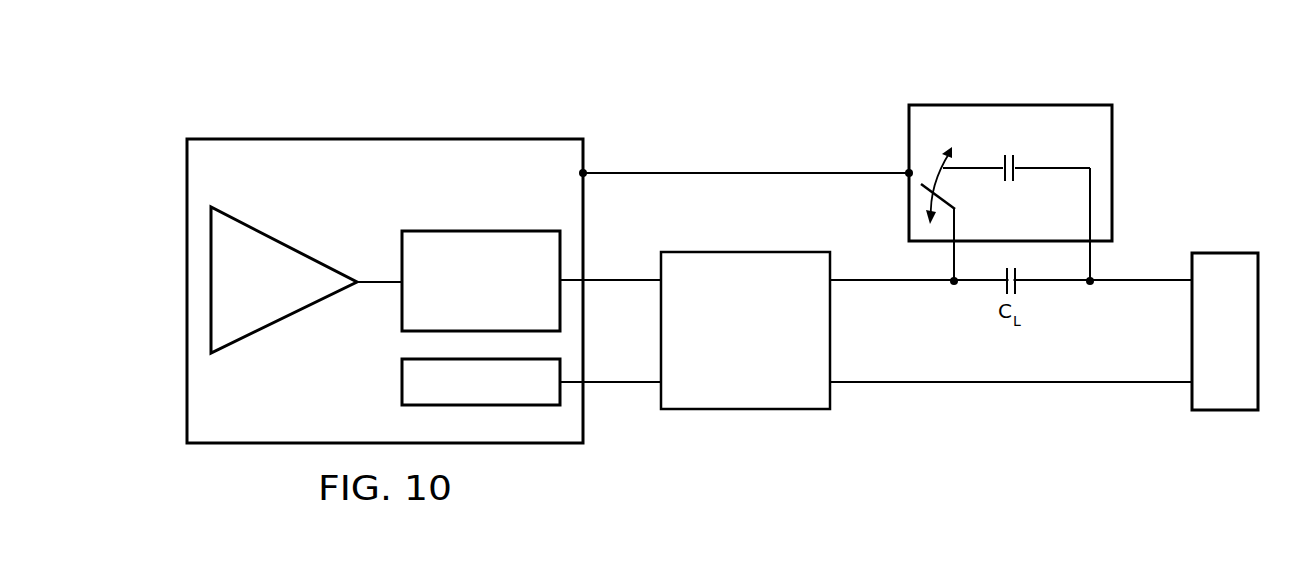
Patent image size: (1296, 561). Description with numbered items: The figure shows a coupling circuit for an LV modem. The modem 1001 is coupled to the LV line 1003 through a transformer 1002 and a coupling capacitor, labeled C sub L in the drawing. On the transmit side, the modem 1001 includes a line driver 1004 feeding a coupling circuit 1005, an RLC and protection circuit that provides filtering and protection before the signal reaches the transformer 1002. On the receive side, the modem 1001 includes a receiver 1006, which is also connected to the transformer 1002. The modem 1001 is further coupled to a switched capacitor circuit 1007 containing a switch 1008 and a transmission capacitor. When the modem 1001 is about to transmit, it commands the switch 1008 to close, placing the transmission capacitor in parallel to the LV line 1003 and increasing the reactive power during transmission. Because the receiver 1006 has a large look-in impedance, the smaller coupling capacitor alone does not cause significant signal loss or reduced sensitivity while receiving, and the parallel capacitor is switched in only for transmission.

The modem 1001 is at (318, 134).
The transformer 1002 is at (745, 411).
The LV line 1003 is at (1225, 412).
The line driver 1004 is at (282, 243).
The coupling circuit 1005 is at (482, 230).
The receiver 1006 is at (401, 393).
The switched capacitor circuit 1007 is at (1070, 98).
The switch 1008 is at (957, 218).